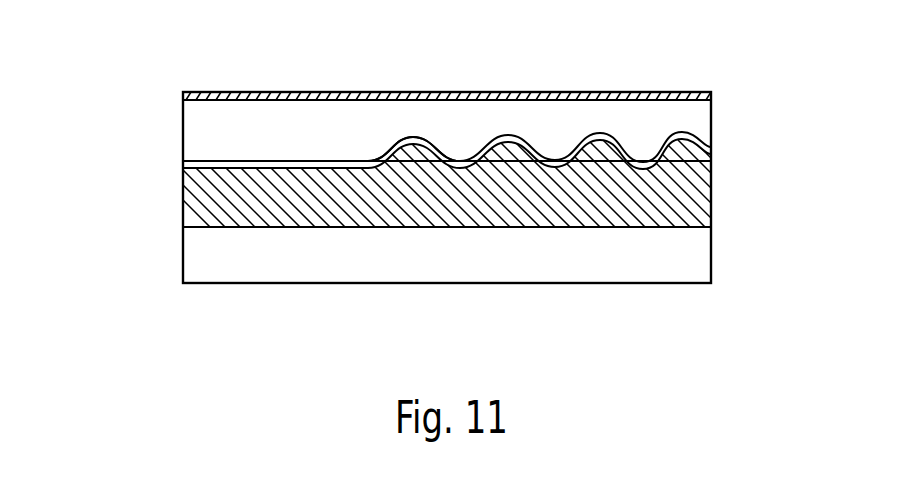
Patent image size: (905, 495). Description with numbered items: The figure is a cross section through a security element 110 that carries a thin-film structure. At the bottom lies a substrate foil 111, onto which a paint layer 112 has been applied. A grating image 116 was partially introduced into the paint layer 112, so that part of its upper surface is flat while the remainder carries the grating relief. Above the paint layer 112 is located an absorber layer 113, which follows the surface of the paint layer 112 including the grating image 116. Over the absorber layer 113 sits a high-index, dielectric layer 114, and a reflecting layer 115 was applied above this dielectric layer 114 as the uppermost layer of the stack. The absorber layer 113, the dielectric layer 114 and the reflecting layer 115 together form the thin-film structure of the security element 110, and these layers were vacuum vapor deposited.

The security element 110 is at (137, 87).
The substrate foil 111 is at (693, 257).
The paint layer 112 is at (695, 188).
The absorber layer 113 is at (697, 141).
The high-index, dielectric layer 114 is at (693, 116).
The reflecting layer 115 is at (696, 97).
The grating image 116 is at (414, 145).